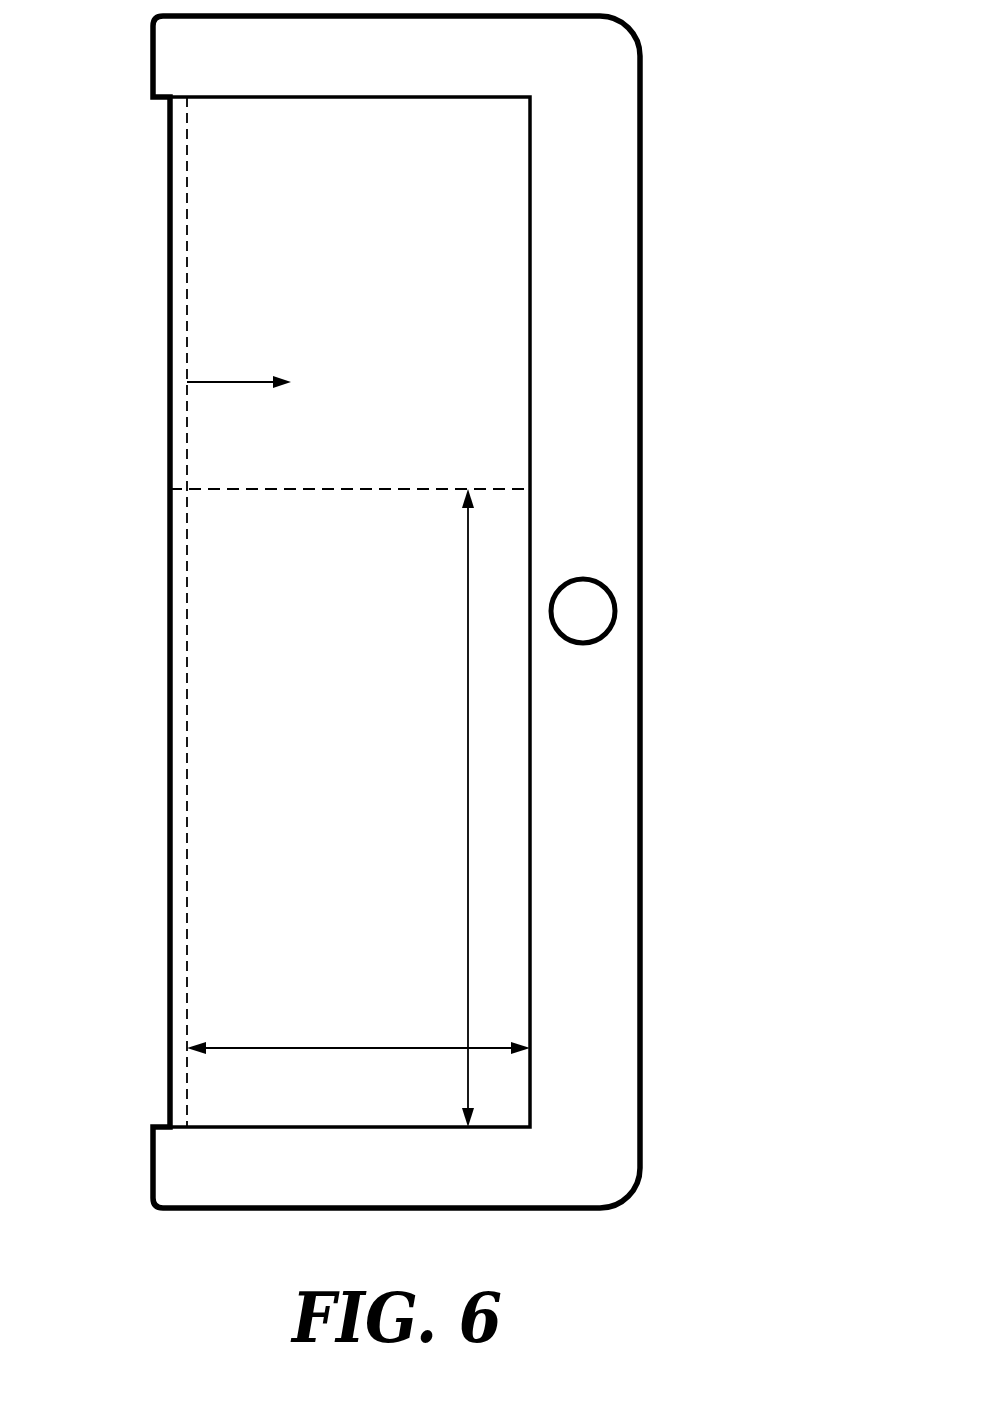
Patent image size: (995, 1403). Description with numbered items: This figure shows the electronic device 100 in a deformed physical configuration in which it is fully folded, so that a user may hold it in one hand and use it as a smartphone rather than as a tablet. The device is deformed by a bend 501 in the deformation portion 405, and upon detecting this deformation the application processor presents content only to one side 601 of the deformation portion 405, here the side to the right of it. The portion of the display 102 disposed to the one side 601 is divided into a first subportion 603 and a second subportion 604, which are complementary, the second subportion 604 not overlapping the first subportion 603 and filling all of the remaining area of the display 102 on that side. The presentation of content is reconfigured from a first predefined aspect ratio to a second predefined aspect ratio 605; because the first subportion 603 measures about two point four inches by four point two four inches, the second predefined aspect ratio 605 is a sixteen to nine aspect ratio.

The electronic device 100 is at (792, 152).
The display 102 is at (497, 540).
The deformation portion 405 is at (170, 575).
The bend 501 is at (168, 296).
The one side 601 is at (237, 382).
The first subportion 603 is at (517, 808).
The second subportion 604 is at (480, 362).
The second predefined aspect ratio 605 is at (468, 1012).